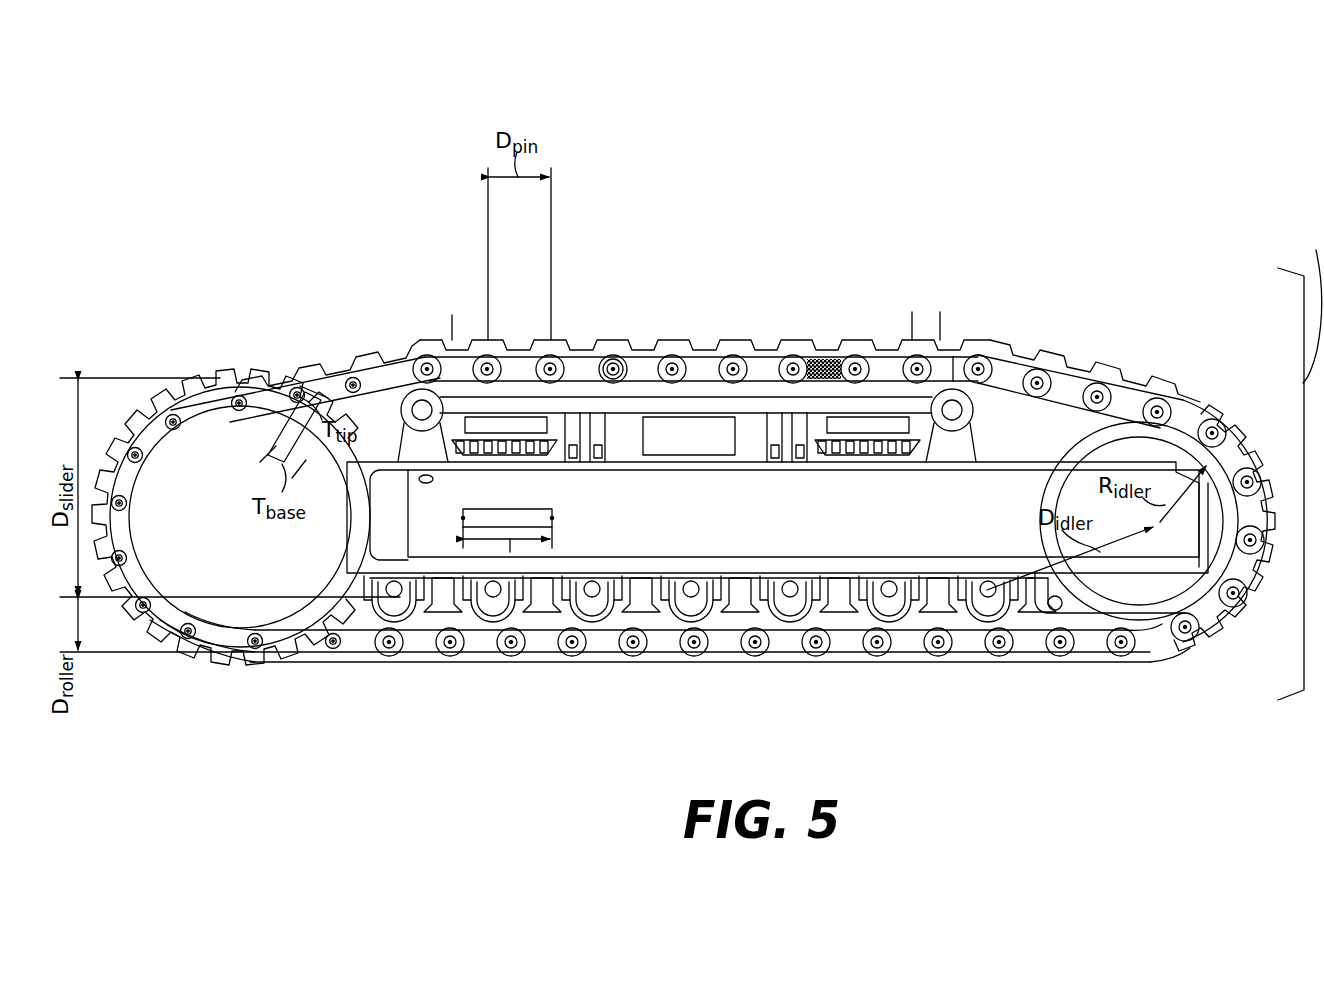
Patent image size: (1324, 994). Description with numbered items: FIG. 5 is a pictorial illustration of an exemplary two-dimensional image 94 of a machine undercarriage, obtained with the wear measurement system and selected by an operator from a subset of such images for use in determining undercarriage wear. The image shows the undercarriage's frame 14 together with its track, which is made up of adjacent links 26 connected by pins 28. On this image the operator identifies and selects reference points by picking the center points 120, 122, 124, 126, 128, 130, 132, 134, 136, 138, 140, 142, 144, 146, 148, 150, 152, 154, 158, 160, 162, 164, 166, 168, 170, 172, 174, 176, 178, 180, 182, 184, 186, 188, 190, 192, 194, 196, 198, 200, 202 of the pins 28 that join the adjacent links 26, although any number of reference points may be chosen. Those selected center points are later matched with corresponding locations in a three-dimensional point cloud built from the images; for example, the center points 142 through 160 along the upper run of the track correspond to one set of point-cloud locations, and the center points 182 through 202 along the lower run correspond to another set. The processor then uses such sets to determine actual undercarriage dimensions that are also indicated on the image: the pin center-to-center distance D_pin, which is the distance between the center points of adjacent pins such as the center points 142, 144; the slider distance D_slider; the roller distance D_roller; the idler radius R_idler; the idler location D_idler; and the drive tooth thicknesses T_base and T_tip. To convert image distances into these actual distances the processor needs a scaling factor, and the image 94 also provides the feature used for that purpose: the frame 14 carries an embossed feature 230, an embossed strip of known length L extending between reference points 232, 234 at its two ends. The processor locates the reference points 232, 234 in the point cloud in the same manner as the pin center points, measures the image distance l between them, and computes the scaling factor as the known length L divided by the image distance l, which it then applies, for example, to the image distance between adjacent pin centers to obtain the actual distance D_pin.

The frame 14 is at (787, 521).
The link 26 is at (530, 348).
The pin 28 is at (600, 356).
The 2D image 94 is at (1062, 157).
The pin center point 120 is at (333, 649).
The pin center point 122 is at (255, 649).
The pin center point 124 is at (188, 639).
The pin center point 126 is at (143, 612).
The pin center point 128 is at (126, 558).
The pin center point 130 is at (126, 503).
The pin center point 132 is at (133, 450).
The pin center point 134 is at (173, 416).
The pin center point 136 is at (239, 397).
The pin center point 138 is at (297, 389).
The pin center point 140 is at (353, 379).
The pin center point 142 is at (427, 355).
The pin center point 144 is at (487, 355).
The pin center point 146 is at (550, 355).
The pin center point 148 is at (616, 355).
The pin center point 150 is at (672, 355).
The pin center point 152 is at (733, 355).
The pin center point 154 is at (793, 355).
The pin center point 158 is at (953, 362).
The pin center point 160 is at (990, 372).
The pin center point 162 is at (1074, 374).
The pin center point 164 is at (1128, 382).
The pin center point 166 is at (1170, 412).
The pin center point 168 is at (1215, 432).
The pin center point 170 is at (1248, 480).
The pin center point 172 is at (1252, 545).
The pin center point 174 is at (1233, 600).
The pin center point 176 is at (1185, 636).
The pin center point 178 is at (1121, 650).
The pin center point 180 is at (1060, 650).
The pin center point 182 is at (999, 650).
The pin center point 184 is at (938, 650).
The pin center point 186 is at (877, 650).
The pin center point 188 is at (816, 650).
The pin center point 190 is at (755, 650).
The pin center point 192 is at (694, 650).
The pin center point 194 is at (633, 650).
The pin center point 196 is at (572, 650).
The pin center point 198 is at (511, 650).
The pin center point 200 is at (450, 650).
The pin center point 202 is at (389, 650).
The embossed feature 230 is at (530, 509).
The reference point 232 is at (463, 518).
The reference point 234 is at (552, 518).